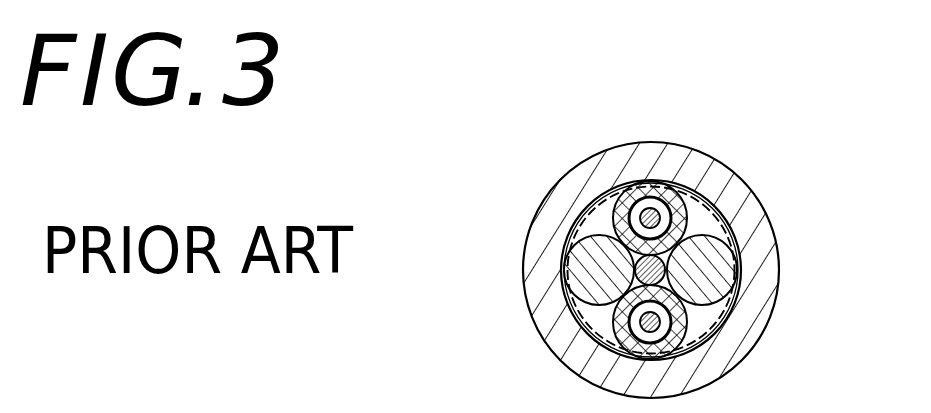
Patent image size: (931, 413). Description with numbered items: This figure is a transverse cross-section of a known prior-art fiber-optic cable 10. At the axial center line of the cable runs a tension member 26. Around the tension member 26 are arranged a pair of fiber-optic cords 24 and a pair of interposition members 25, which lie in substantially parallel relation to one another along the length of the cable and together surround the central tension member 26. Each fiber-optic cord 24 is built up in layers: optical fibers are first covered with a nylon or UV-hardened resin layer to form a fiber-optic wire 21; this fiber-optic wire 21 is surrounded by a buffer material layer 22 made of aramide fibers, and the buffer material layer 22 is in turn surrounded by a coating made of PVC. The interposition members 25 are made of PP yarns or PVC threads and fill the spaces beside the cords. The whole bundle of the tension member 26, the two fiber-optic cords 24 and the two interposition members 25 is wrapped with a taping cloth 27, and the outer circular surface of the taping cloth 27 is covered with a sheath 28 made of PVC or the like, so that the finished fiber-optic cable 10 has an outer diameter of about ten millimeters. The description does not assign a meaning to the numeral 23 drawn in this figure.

The fiber-optic cable 10 is at (774, 140).
The fiber-optic wire 21 is at (623, 196).
The buffer material layer 22 is at (650, 181).
The insulated wire 23 is at (605, 191).
The fiber-optic cord 24 is at (731, 168).
The interposition member 25 is at (566, 280).
The tension member 26 is at (667, 278).
The taping cloth 27 is at (690, 212).
The sheath 28 is at (598, 353).